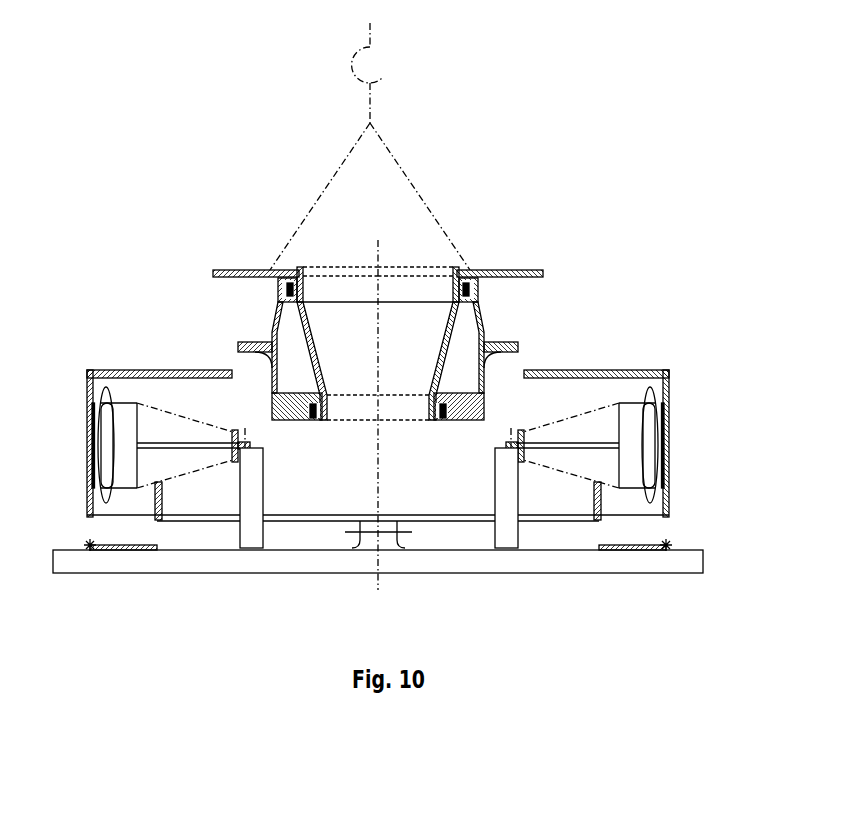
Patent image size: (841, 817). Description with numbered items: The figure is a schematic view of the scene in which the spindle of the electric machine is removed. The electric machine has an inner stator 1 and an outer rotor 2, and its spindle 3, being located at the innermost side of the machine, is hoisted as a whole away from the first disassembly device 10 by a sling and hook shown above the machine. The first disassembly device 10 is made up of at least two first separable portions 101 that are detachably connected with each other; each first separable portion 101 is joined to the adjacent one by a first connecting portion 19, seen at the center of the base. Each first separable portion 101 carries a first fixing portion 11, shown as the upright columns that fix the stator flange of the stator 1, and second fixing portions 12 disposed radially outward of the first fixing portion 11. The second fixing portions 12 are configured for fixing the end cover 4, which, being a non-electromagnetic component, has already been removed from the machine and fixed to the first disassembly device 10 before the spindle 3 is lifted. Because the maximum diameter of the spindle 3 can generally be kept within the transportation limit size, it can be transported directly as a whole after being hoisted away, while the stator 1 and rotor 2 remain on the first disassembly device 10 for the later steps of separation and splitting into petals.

The stator 1 is at (594, 505).
The rotor 2 is at (667, 443).
The spindle 3 is at (491, 323).
The end cover 4 is at (150, 545).
The first disassembly device 10 is at (343, 585).
The first fixing portion 11 is at (257, 500).
The second fixing portion 12 is at (90, 544).
The first connecting portion 19 is at (390, 548).
The first separable portion 101 is at (227, 568).